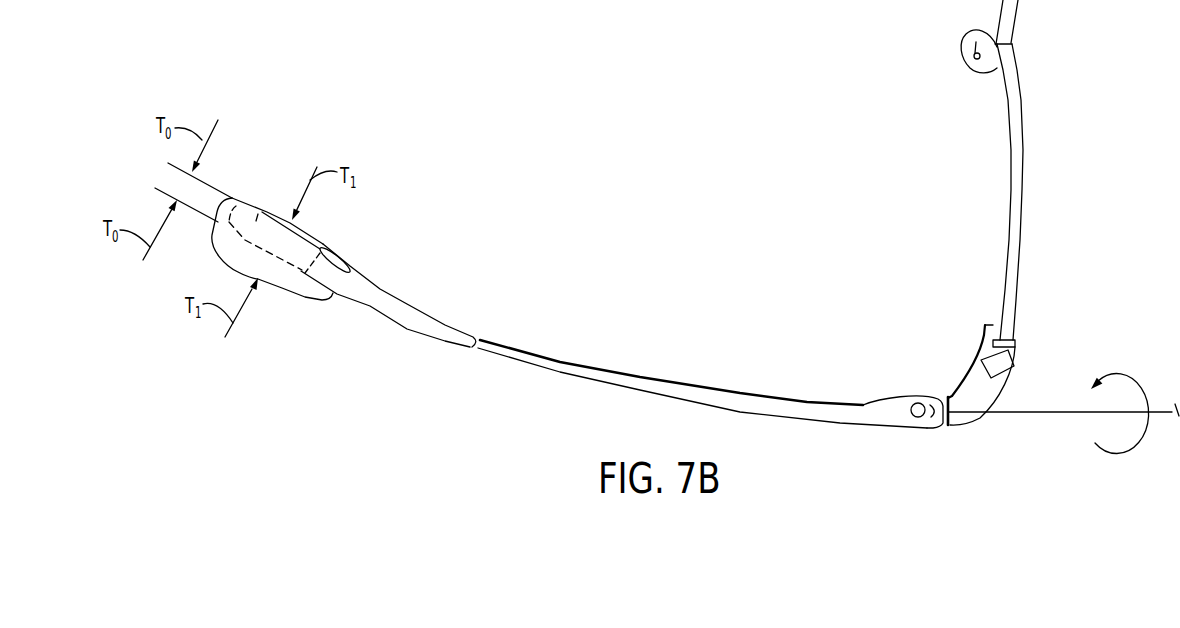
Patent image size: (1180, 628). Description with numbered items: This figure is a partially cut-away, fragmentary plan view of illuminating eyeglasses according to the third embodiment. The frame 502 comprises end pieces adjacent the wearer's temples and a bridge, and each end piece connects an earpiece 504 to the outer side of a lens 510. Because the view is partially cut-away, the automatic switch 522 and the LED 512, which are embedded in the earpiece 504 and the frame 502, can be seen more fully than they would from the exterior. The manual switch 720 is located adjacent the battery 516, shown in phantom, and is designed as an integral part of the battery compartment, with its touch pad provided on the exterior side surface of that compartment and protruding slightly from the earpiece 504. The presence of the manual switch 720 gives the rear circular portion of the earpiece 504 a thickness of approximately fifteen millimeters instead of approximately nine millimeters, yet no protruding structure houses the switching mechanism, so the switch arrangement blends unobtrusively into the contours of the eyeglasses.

The frame 502 is at (978, 425).
The earpiece 504 is at (533, 365).
The lens 510 is at (1017, 197).
The LED 512 is at (1012, 356).
The battery 516 is at (258, 208).
The automatic switch 522 is at (935, 385).
The manual switch 720 is at (283, 288).